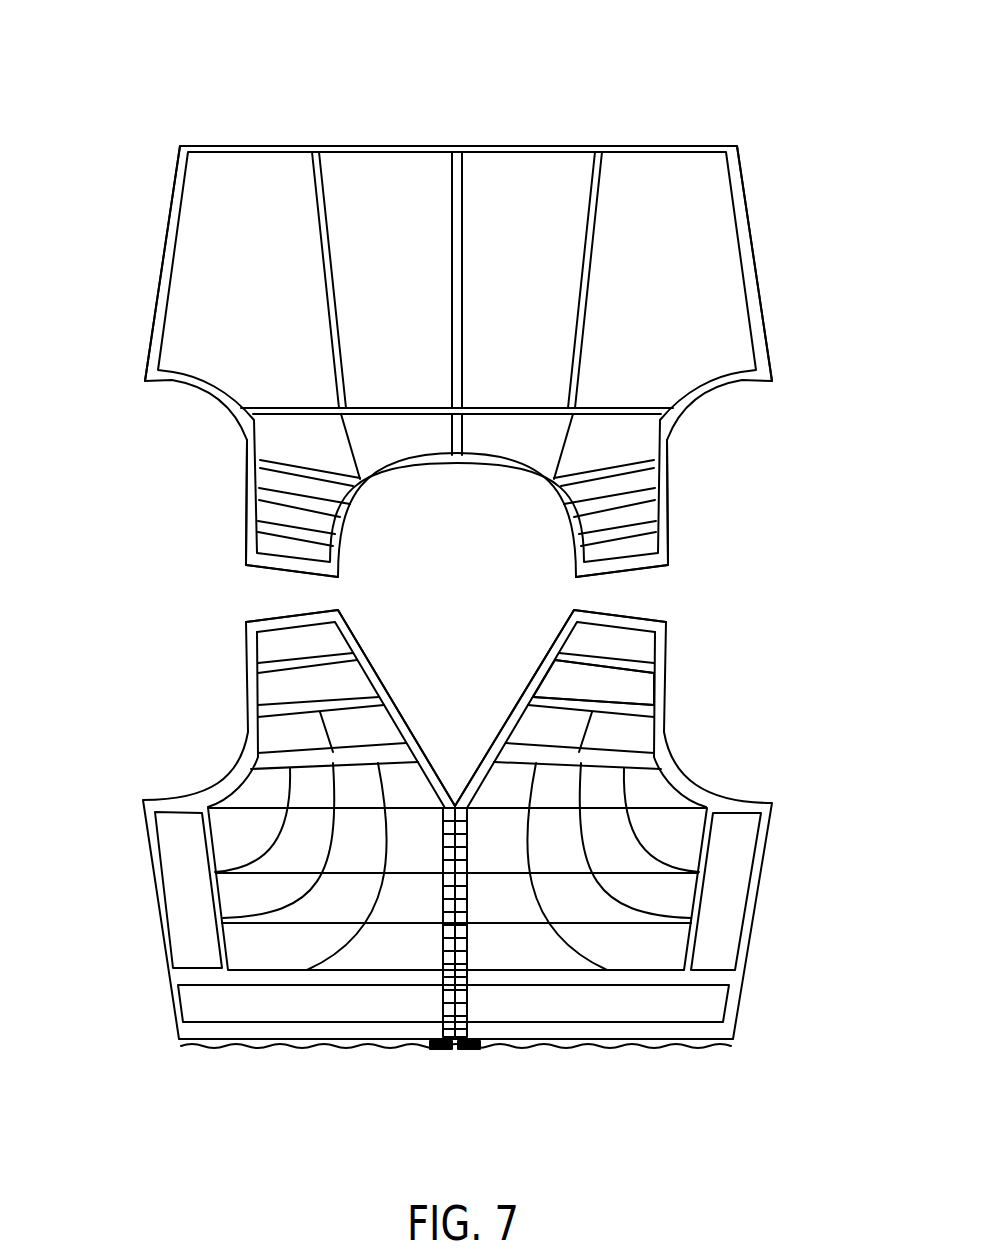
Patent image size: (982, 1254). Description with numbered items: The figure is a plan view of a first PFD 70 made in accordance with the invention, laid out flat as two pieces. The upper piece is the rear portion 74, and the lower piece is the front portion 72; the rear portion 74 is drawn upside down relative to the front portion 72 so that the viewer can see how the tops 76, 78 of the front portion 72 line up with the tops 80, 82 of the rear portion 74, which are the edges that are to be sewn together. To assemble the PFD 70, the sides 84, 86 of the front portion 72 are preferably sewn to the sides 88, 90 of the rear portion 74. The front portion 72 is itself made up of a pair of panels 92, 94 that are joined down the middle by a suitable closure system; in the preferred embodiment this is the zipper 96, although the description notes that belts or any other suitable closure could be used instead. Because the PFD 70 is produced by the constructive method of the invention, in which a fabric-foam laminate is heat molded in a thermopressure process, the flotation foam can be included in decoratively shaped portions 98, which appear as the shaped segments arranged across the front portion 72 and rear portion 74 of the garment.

The PFD 70 is at (197, 105).
The front portion 72 is at (228, 830).
The rear portion 74 is at (245, 352).
The top of front portion 76 is at (297, 612).
The top of front portion 78 is at (620, 615).
The top of rear portion 80 is at (285, 567).
The top of rear portion 82 is at (627, 570).
The side of front portion 84 is at (143, 845).
The side of front portion 86 is at (767, 850).
The side of rear portion 88 is at (160, 262).
The side of rear portion 90 is at (758, 262).
The panel 92 is at (307, 728).
The panel 94 is at (567, 683).
The zipper 96 is at (443, 850).
The decoratively shaped portions 98 is at (640, 652).